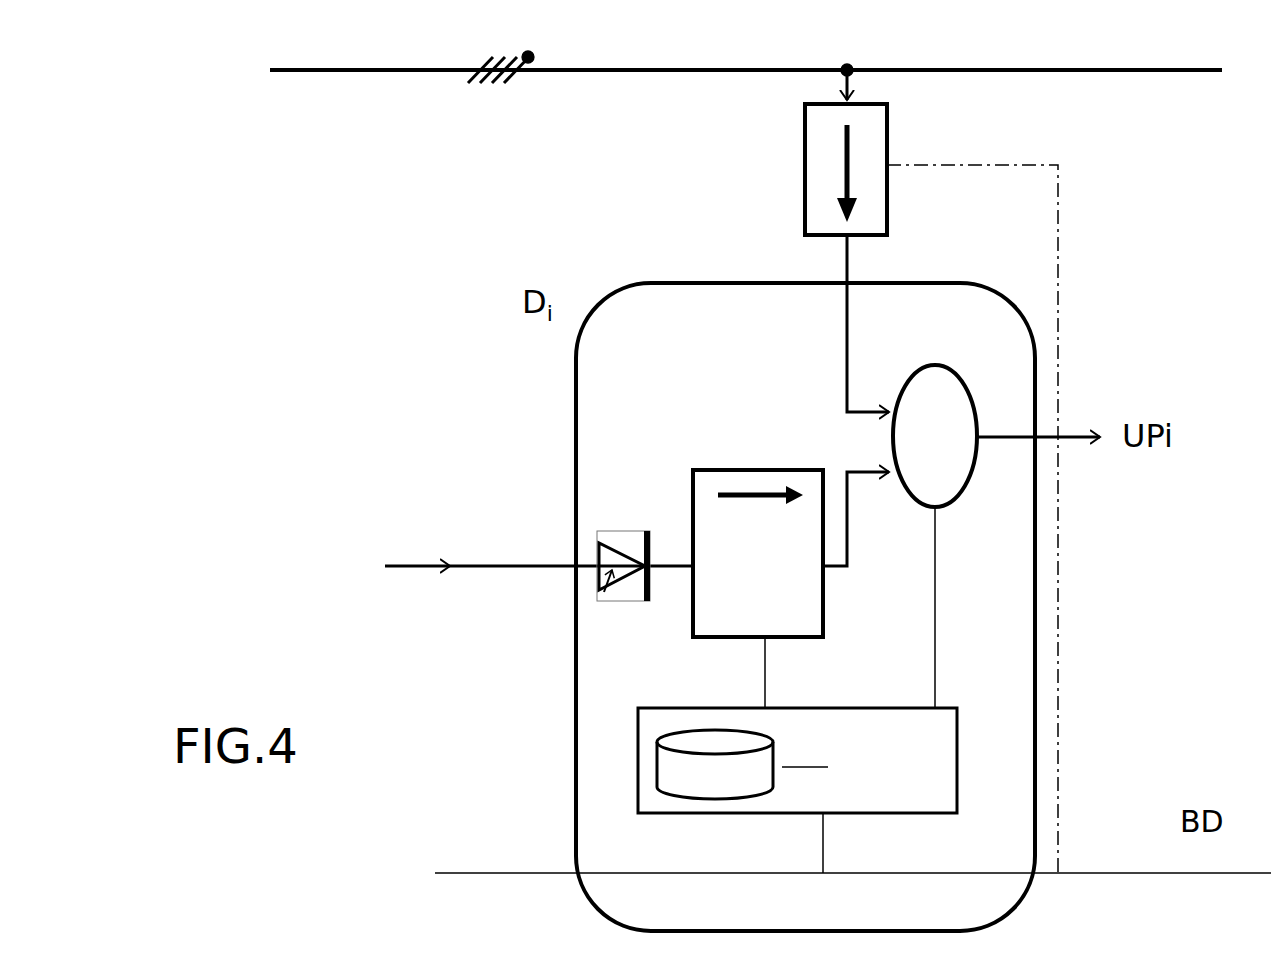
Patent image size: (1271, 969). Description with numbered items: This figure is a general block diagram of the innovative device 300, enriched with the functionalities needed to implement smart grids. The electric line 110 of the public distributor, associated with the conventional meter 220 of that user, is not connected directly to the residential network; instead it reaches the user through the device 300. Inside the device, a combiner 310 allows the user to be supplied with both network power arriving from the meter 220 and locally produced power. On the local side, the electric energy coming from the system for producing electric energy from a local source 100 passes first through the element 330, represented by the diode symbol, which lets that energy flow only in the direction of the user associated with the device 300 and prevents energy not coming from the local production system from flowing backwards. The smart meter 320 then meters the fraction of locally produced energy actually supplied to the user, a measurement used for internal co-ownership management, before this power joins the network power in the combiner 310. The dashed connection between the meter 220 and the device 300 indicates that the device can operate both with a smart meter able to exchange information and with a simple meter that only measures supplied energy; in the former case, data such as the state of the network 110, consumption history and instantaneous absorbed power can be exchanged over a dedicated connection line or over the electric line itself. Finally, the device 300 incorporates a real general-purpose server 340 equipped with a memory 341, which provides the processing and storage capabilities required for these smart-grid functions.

The electric line 110 is at (731, 47).
The meter 220 is at (896, 468).
The device 300 is at (805, 607).
The combiner 310 is at (982, 476).
The smart meter 320 is at (816, 600).
The system for producing electric energy from a local source 100 is at (506, 571).
The element represented by the diode symbol 330 is at (608, 599).
The general-purpose server 340 is at (678, 818).
The memory 341 is at (645, 742).